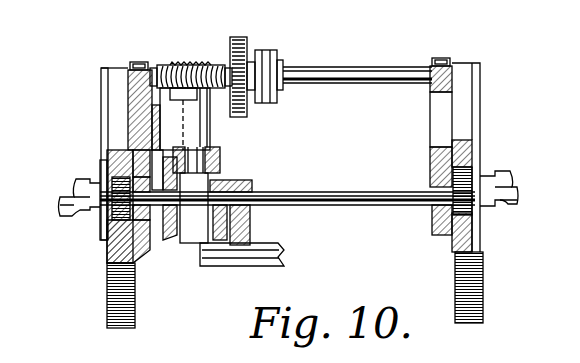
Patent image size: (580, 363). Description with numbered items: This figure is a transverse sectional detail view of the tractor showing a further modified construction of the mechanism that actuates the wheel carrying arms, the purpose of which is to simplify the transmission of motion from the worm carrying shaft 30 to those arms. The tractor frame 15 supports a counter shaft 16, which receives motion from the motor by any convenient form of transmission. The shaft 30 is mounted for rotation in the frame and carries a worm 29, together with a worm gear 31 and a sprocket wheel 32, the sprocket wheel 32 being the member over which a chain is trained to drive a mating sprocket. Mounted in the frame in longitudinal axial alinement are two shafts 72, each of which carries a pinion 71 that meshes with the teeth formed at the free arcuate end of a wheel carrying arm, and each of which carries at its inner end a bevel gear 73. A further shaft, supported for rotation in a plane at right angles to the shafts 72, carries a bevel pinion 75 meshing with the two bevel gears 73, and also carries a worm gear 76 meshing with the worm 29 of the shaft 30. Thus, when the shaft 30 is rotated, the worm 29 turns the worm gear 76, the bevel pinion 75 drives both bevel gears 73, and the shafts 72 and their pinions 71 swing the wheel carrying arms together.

The tractor frame 15 is at (430, 160).
The counter shaft 16 is at (75, 178).
The worm 29 is at (202, 56).
The shaft 30 is at (363, 70).
The worm gear 31 is at (236, 38).
The sprocket wheel 32 is at (264, 51).
The pinion 71 is at (486, 164).
The shaft 72 is at (207, 149).
The bevel gear 73 is at (225, 173).
The bevel pinion 75 is at (220, 158).
The worm gear 76 is at (158, 68).